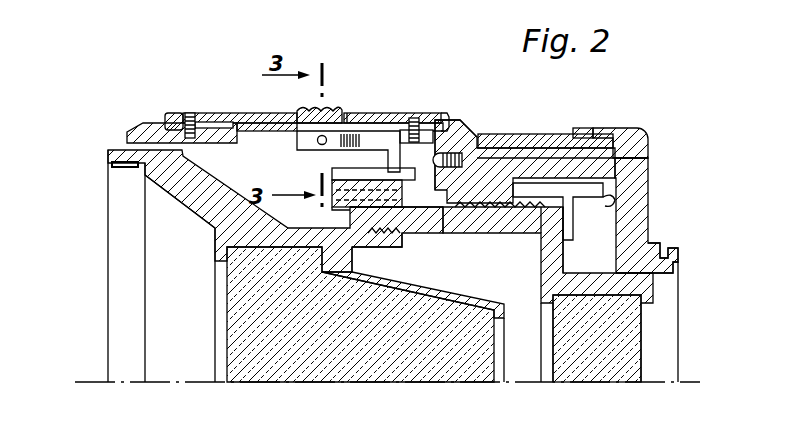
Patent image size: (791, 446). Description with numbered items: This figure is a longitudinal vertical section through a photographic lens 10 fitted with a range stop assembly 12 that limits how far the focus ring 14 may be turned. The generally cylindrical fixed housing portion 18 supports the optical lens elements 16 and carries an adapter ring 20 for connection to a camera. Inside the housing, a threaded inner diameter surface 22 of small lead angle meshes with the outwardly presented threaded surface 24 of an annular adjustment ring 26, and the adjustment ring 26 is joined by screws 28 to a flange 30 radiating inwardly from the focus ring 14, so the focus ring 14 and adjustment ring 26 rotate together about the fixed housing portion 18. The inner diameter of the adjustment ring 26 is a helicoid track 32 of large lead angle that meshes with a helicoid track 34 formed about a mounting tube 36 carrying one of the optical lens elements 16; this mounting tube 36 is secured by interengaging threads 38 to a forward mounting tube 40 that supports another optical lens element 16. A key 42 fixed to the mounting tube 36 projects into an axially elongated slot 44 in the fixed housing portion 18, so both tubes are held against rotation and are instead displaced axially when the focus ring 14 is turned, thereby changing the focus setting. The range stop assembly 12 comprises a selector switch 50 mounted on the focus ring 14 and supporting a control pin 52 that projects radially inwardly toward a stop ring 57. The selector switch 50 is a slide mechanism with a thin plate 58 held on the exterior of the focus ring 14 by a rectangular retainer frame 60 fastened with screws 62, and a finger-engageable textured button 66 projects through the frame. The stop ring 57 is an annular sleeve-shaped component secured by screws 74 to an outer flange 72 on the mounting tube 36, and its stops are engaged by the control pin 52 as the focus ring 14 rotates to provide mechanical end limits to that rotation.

The photographic lens 10 is at (116, 95).
The range stop assembly 12 is at (248, 162).
The focus ring 14 is at (490, 150).
The optical lens elements 16 is at (285, 367).
The fixed housing portion 18 is at (646, 162).
The adapter ring 20 is at (674, 268).
The threaded inner diameter surface 22 is at (553, 134).
The threaded surface 24 is at (506, 170).
The adjustment ring 26 is at (451, 160).
The screws 28 is at (441, 140).
The flange 30 is at (444, 143).
The helicoid track 32 is at (490, 209).
The helicoid track 34 is at (543, 248).
The mounting tube 36 is at (552, 274).
The interengaging threads 38 is at (384, 245).
The forward mounting tube 40 is at (213, 215).
The key 42 is at (568, 210).
The axially elongated slot 44 is at (605, 199).
The selector switch 50 is at (337, 100).
The control pin 52 is at (389, 157).
The stop ring 57 is at (347, 213).
The plate 58 is at (268, 111).
The retainer frame 60 is at (170, 112).
The screws 62 is at (194, 111).
The textured button 66 is at (335, 116).
The outer flange 72 is at (398, 207).
The screws 74 is at (332, 218).